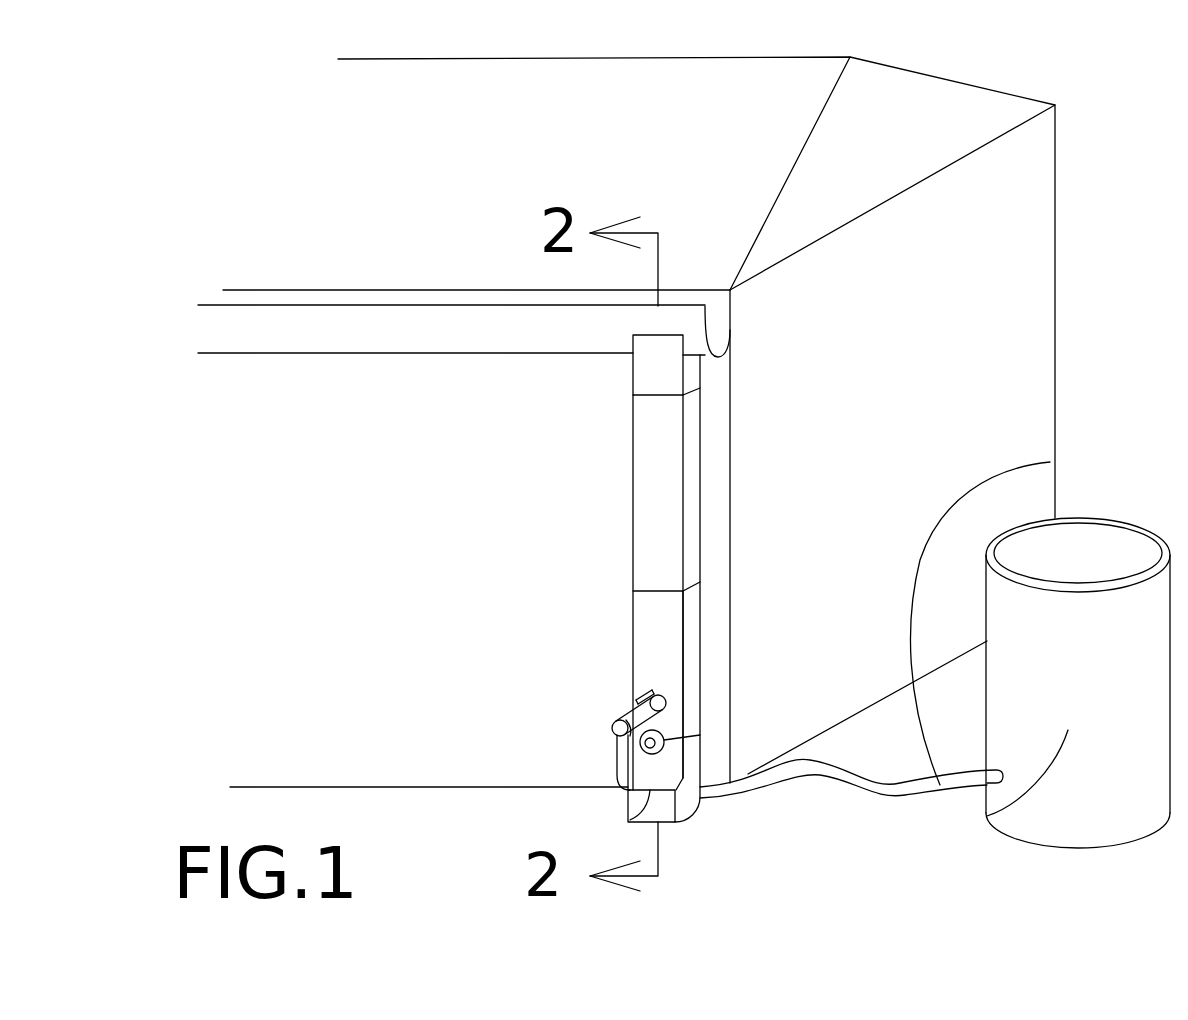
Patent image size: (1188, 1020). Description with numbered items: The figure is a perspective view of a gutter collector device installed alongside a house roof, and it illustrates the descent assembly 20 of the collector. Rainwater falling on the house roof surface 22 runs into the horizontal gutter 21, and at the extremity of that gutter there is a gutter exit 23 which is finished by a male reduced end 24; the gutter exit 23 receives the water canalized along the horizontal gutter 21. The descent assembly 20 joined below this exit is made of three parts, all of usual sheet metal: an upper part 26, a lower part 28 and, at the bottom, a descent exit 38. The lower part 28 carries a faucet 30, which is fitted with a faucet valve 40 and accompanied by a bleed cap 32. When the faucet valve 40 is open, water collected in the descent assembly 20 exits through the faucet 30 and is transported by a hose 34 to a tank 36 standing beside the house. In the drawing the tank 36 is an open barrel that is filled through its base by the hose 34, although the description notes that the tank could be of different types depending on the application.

The descent assembly 20 is at (572, 544).
The horizontal gutter 21 is at (428, 320).
The house roof surface 22 is at (570, 148).
The gutter exit 23 is at (660, 375).
The male reduced end 24 is at (668, 398).
The upper part 26 is at (693, 460).
The lower part 28 is at (700, 625).
The faucet 30 is at (617, 728).
The bleed cap 32 is at (700, 735).
The hose 34 is at (1050, 462).
The tank 36 is at (987, 816).
The descent exit 38 is at (652, 806).
The faucet valve 40 is at (643, 695).